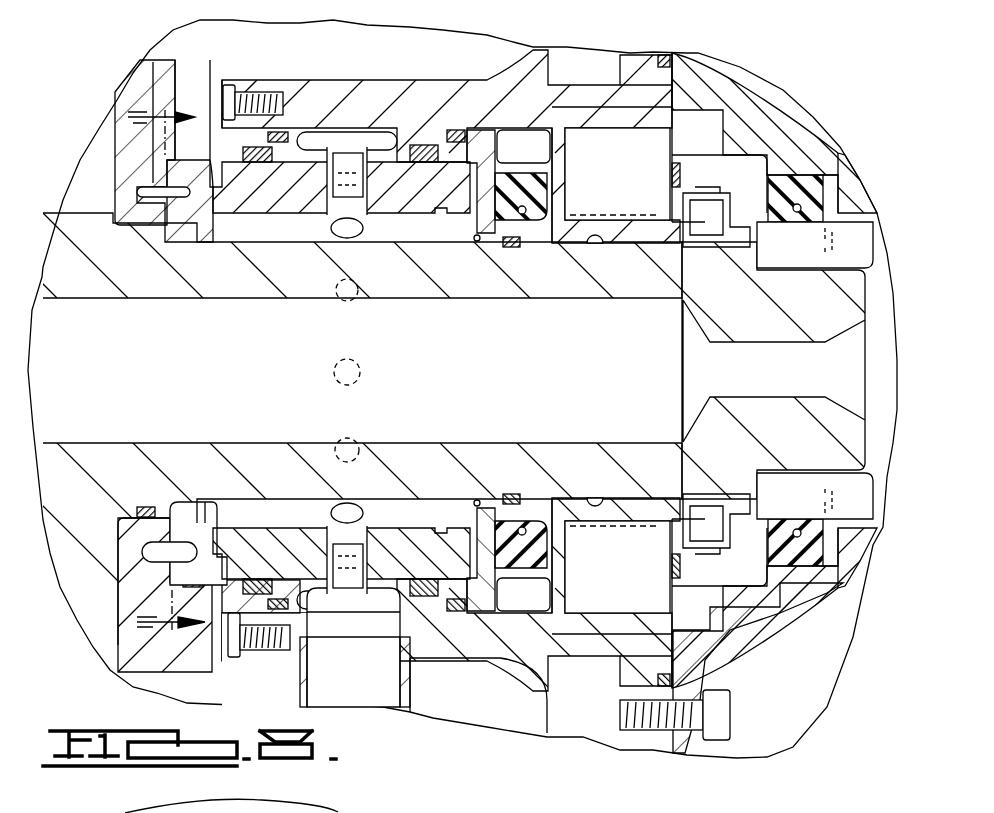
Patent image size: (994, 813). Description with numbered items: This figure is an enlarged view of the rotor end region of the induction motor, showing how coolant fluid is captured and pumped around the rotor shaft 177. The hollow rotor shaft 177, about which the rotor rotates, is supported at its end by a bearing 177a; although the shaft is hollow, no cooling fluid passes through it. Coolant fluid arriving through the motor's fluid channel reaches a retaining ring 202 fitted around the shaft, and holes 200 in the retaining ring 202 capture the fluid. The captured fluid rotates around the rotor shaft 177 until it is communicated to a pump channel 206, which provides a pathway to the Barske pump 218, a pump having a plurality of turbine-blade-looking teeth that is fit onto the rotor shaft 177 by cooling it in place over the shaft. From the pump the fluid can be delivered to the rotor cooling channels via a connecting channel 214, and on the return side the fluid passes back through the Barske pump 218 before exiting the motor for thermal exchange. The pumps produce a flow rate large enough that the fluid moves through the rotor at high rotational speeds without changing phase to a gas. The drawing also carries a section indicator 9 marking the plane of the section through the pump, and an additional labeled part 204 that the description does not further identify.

The connecting channel 214 is at (143, 148).
The Barske pump 218 is at (175, 190).
The pump channel 206 is at (267, 233).
The retaining ring 202 is at (300, 173).
The bearing 177a is at (648, 165).
The rotor shaft 177 is at (596, 246).
The holes 200 is at (352, 232).
The housing flange 204 is at (398, 688).
The section line 9- 9 is at (197, 115).